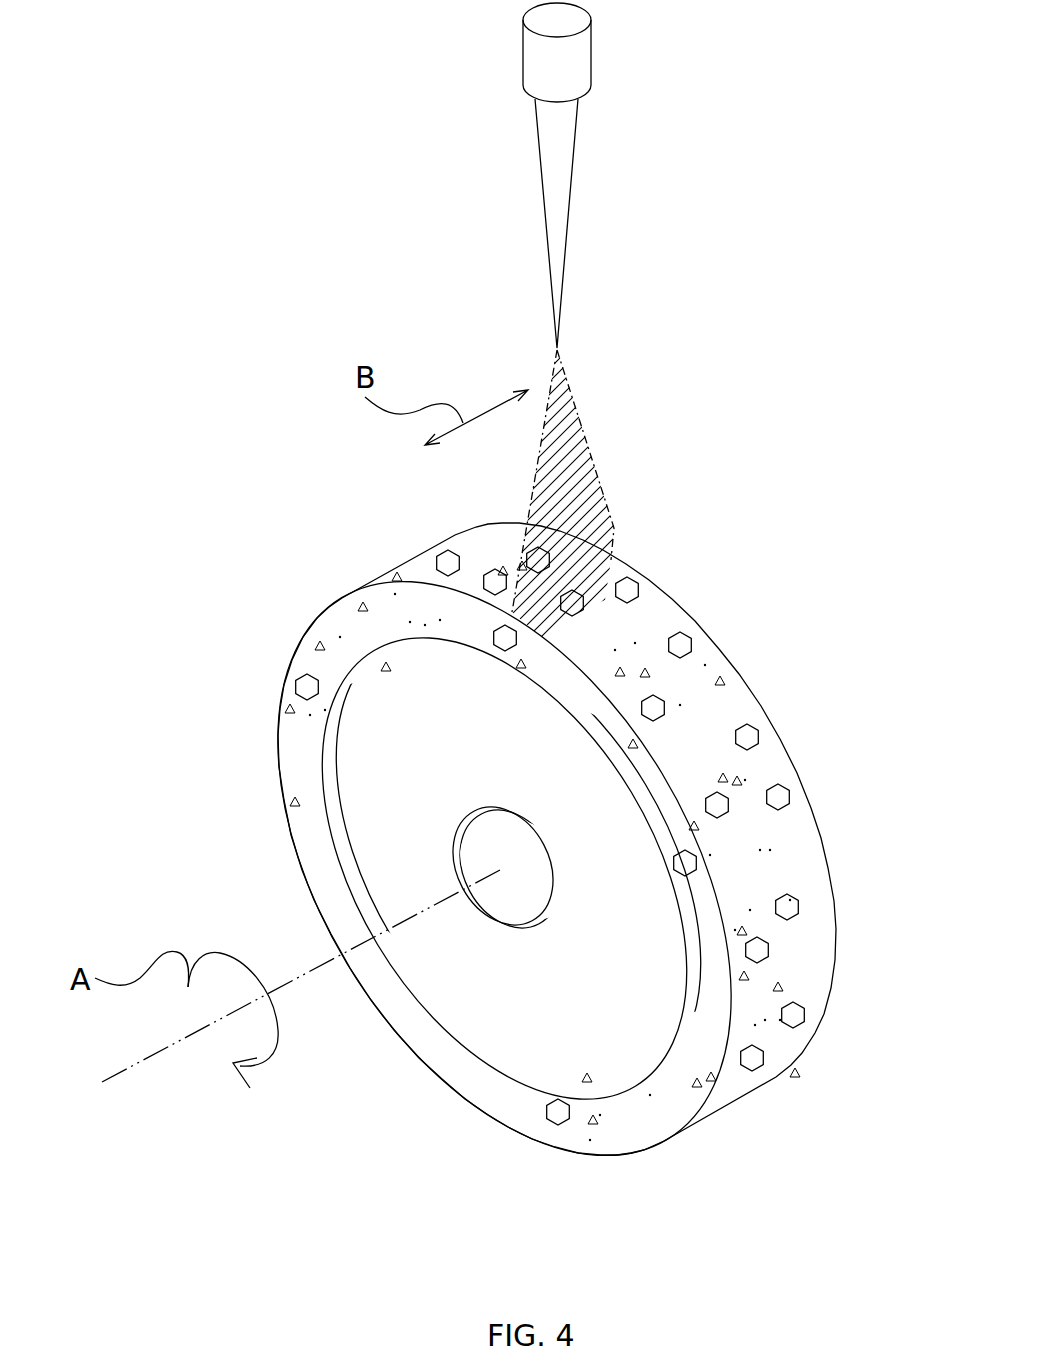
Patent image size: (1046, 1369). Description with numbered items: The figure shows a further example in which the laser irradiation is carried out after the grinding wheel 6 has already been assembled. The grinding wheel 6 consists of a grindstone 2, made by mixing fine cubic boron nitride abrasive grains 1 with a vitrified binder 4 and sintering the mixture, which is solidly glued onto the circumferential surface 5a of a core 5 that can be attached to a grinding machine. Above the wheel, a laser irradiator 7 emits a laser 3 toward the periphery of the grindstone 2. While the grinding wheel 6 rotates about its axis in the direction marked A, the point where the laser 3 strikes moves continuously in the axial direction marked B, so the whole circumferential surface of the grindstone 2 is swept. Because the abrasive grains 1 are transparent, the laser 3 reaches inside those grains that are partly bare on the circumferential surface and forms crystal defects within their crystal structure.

The abrasive grains 1 is at (773, 793).
The grindstone 2 is at (568, 868).
The binder 4 is at (504, 868).
The laser 3 is at (563, 180).
The core 5 is at (417, 887).
The circumferential surface 5a is at (473, 1048).
The grinding wheel 6 is at (568, 848).
The laser irradiator 7 is at (542, 45).